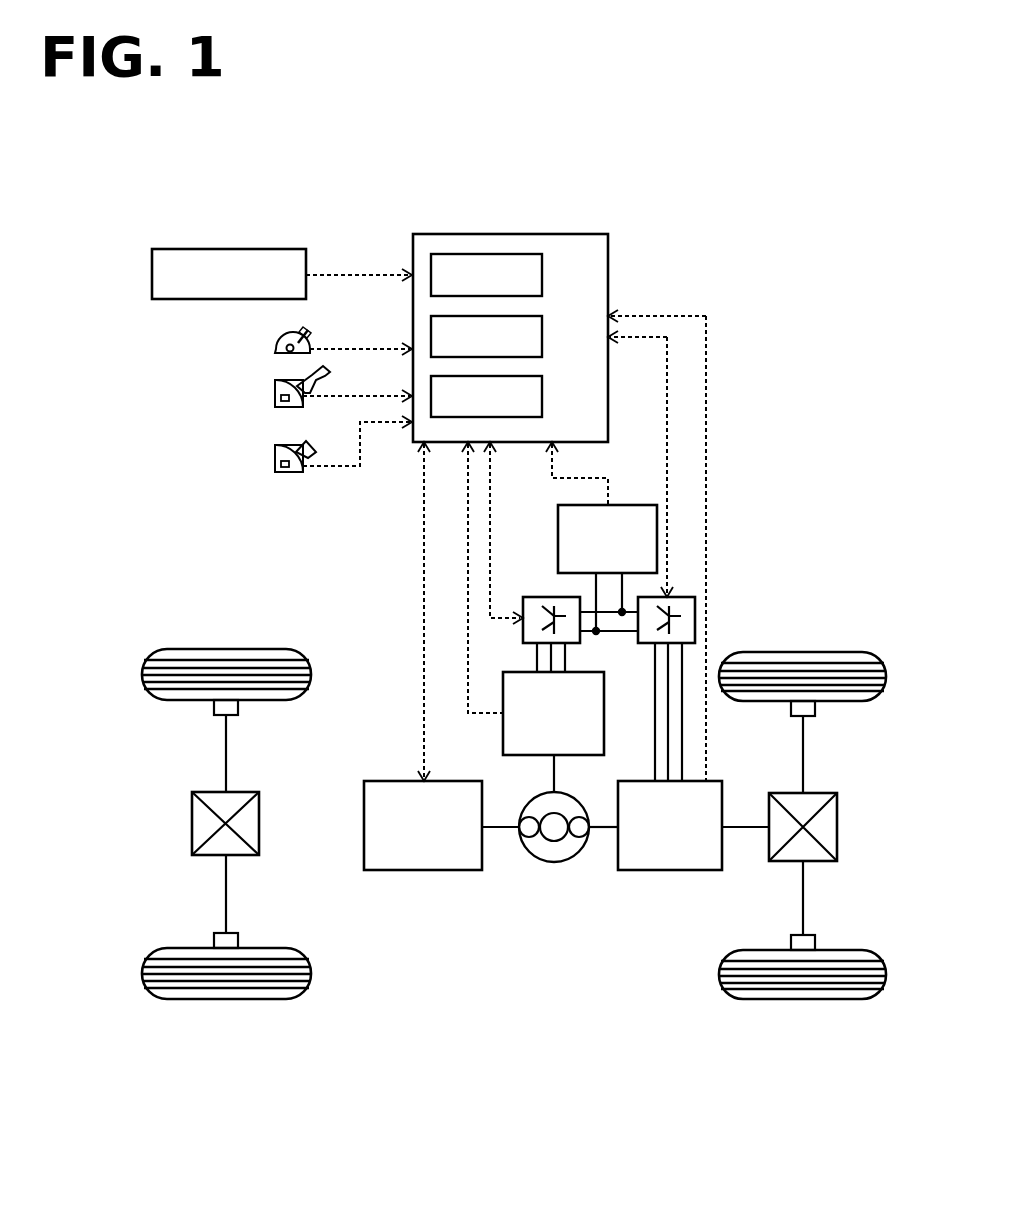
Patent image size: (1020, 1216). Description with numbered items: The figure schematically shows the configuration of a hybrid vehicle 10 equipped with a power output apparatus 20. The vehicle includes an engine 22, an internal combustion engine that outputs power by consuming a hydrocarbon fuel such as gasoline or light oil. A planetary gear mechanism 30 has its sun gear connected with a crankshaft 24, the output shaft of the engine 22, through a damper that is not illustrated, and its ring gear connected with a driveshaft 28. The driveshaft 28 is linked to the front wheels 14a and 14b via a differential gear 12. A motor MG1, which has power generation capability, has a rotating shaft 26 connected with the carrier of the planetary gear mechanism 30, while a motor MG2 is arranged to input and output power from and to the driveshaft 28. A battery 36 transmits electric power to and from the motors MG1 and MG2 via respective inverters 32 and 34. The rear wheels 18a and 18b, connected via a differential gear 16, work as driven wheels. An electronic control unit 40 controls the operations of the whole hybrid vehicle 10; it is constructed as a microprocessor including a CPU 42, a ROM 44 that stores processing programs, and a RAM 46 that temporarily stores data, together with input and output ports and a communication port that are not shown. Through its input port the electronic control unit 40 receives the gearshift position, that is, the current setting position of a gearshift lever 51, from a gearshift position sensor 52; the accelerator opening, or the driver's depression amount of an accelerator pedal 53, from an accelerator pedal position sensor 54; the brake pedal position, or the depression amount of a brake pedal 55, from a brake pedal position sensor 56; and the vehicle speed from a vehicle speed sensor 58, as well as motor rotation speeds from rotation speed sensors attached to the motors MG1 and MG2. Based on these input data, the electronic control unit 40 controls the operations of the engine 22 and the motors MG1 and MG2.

The hybrid vehicle 10 is at (817, 352).
The differential gear 12 is at (837, 818).
The front wheel 14a is at (803, 652).
The front wheel 14b is at (803, 999).
The differential gear 16 is at (192, 812).
The rear wheel 18a is at (226, 649).
The rear wheel 18b is at (226, 999).
The power output apparatus 20 is at (472, 946).
The engine 22 is at (422, 870).
The crankshaft 24 is at (500, 830).
The rotating shaft 26 is at (552, 776).
The driveshaft 28 is at (745, 830).
The planetary gear mechanism 30 is at (553, 864).
The inverter 32 is at (545, 597).
The inverter 34 is at (638, 637).
The battery 36 is at (558, 538).
The electronic control unit 40 is at (608, 271).
The CPU 42 is at (543, 272).
The ROM 44 is at (543, 336).
The RAM 46 is at (543, 396).
The gearshift lever 51 is at (300, 340).
The gearshift position sensor 52 is at (288, 349).
The accelerator pedal 53 is at (318, 376).
The accelerator pedal position sensor 54 is at (280, 393).
The brake pedal 55 is at (304, 448).
The brake pedal position sensor 56 is at (280, 460).
The vehicle speed sensor 58 is at (228, 250).
The motor MG1 is at (503, 733).
The motor MG2 is at (667, 871).